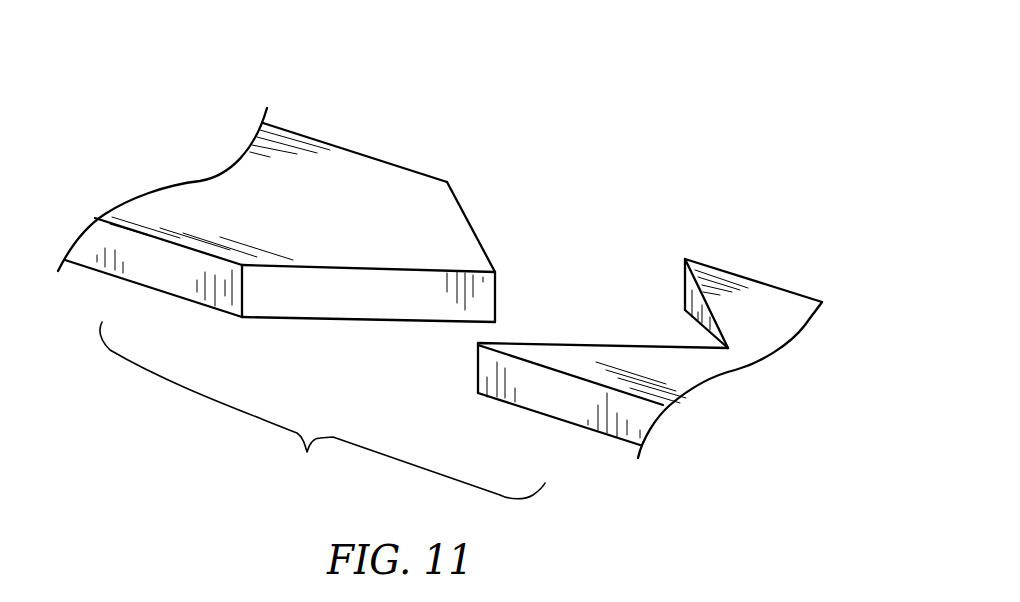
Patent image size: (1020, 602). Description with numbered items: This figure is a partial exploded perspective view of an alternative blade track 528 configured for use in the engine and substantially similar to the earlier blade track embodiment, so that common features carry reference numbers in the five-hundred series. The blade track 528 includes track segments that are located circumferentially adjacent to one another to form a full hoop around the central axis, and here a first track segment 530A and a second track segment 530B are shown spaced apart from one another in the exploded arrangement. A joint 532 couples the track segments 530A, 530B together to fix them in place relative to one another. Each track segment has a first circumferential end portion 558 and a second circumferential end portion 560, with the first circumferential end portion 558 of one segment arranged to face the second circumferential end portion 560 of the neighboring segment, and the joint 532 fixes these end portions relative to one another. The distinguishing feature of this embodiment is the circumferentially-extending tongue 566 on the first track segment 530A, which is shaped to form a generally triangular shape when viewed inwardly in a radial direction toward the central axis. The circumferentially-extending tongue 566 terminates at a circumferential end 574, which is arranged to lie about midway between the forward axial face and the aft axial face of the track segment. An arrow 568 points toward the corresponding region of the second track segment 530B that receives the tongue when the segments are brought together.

The blade track 528 is at (695, 68).
The first track segment 530A is at (327, 170).
The second track segment 530B is at (775, 308).
The joint 532 is at (538, 187).
The first circumferential end portion 558 is at (762, 302).
The second circumferential end portion 560 is at (423, 192).
The circumferentially-extending tongue 566 is at (360, 300).
The bent portion 568 is at (665, 296).
The circumferential end 574 is at (515, 293).